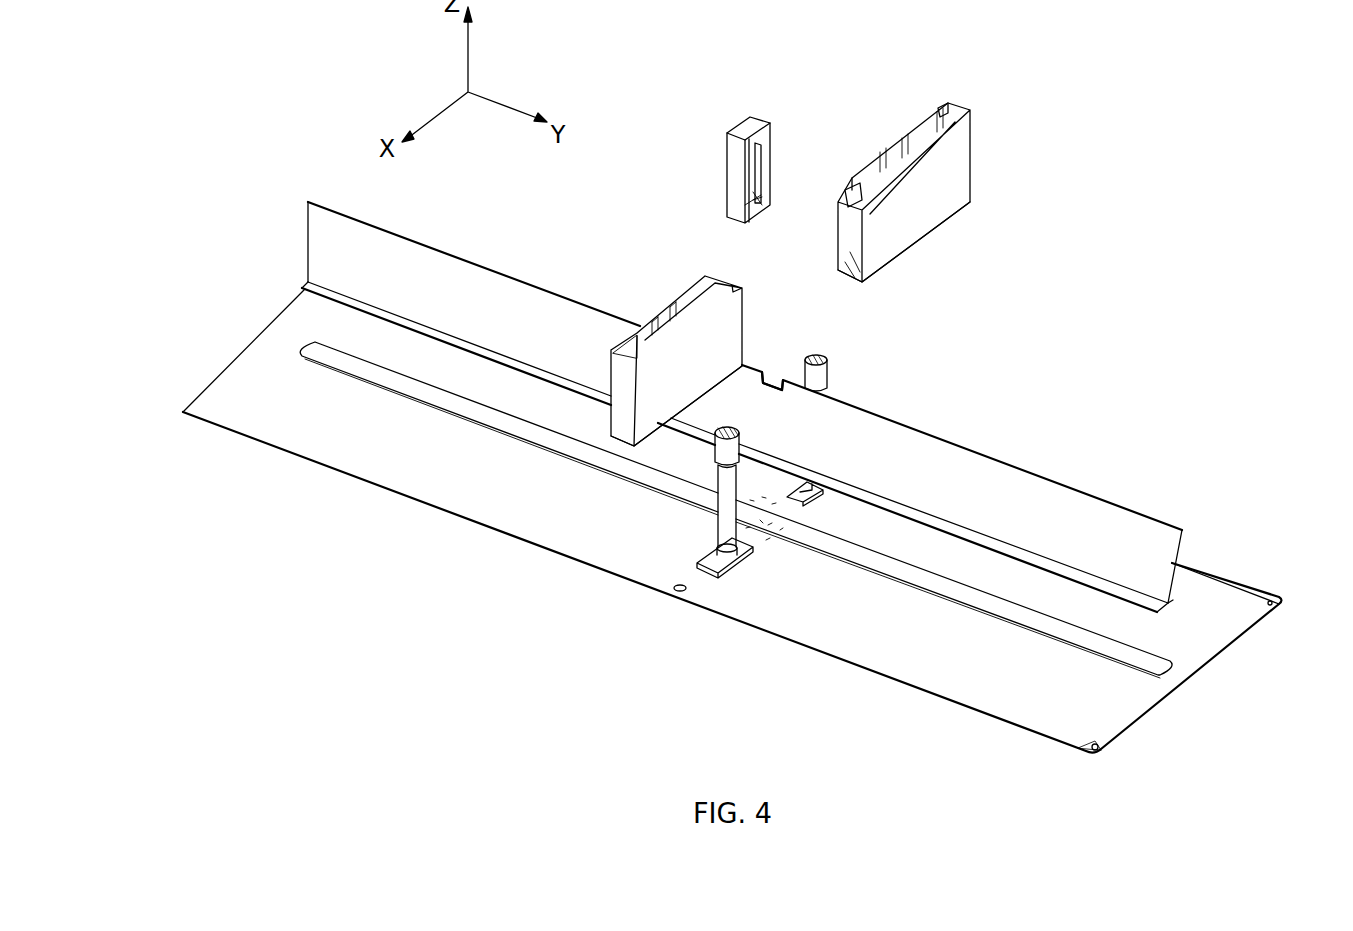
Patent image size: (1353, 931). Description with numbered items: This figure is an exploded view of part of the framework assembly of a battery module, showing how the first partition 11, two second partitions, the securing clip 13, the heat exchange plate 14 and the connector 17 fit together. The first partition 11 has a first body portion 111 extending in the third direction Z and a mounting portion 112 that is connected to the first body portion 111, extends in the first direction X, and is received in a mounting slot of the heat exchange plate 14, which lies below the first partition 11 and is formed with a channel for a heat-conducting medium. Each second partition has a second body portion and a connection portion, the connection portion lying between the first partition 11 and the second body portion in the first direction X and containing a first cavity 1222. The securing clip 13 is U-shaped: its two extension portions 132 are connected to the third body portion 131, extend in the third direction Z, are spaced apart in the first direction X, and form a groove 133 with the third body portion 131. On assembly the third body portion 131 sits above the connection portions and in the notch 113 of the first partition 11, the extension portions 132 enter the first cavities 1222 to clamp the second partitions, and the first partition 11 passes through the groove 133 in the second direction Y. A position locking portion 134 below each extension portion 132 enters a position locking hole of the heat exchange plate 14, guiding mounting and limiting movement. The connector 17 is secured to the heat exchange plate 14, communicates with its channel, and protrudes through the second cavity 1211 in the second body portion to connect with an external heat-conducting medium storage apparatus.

The first partition 11 is at (742, 407).
The first body portion 111 is at (850, 425).
The mounting portion 112 is at (878, 500).
The notch 113 is at (772, 378).
The second cavity 1211 is at (925, 123).
The first cavity 1222 is at (868, 180).
The securing clip 13 is at (737, 173).
The third body portion 131 is at (748, 128).
The extension portion 132 is at (763, 150).
The groove 133 is at (754, 212).
The position locking portion 134 is at (755, 212).
The heat exchange plate 14 is at (480, 502).
The connector 17 is at (733, 482).